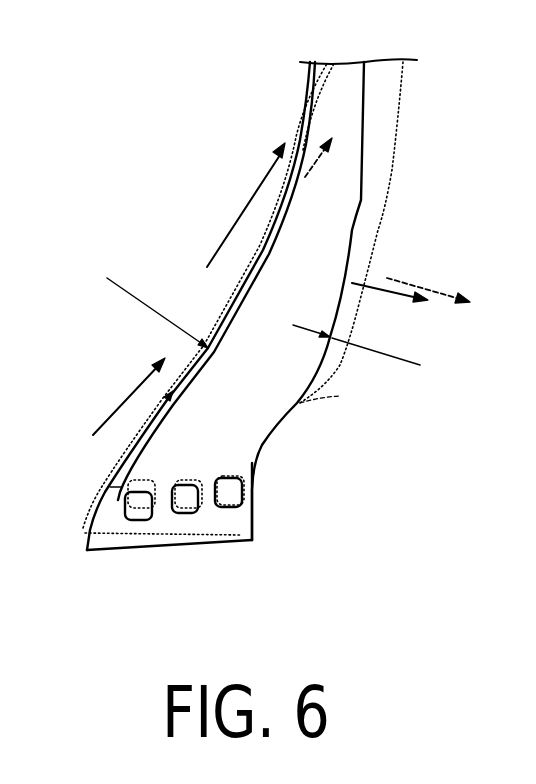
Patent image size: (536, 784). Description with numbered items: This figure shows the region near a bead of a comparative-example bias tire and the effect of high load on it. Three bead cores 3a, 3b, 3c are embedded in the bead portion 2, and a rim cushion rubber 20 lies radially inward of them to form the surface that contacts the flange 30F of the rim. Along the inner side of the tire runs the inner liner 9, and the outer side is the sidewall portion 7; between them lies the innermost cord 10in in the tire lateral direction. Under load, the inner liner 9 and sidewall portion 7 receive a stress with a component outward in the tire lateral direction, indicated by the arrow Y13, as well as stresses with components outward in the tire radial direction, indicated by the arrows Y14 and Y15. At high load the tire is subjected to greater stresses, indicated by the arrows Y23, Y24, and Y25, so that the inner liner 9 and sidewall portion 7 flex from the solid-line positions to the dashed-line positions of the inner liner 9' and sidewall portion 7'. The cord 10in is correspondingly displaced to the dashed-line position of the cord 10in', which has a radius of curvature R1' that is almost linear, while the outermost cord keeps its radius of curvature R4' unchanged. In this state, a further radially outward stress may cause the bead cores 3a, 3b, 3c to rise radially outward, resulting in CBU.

The bead portion 2 is at (105, 553).
The bead core 3a is at (140, 513).
The bead core 3b is at (185, 513).
The bead core 3c is at (226, 507).
The sidewall portion 7 is at (344, 301).
The sidewall portion 7' is at (379, 233).
The inner liner 9 is at (212, 281).
The inner liner 9' is at (291, 101).
The cord 10in is at (161, 306).
The cord 10in' is at (168, 295).
The rim cushion rubber 20 is at (238, 532).
The flange 30F is at (318, 402).
The arrow Y13 is at (402, 297).
The arrow Y14 is at (135, 390).
The arrow Y15 is at (250, 200).
The arrow Y23 is at (440, 293).
The arrow Y24 is at (143, 433).
The arrow Y25 is at (303, 137).
The radius of curvature R1' is at (157, 294).
The radius of curvature R4' is at (356, 340).